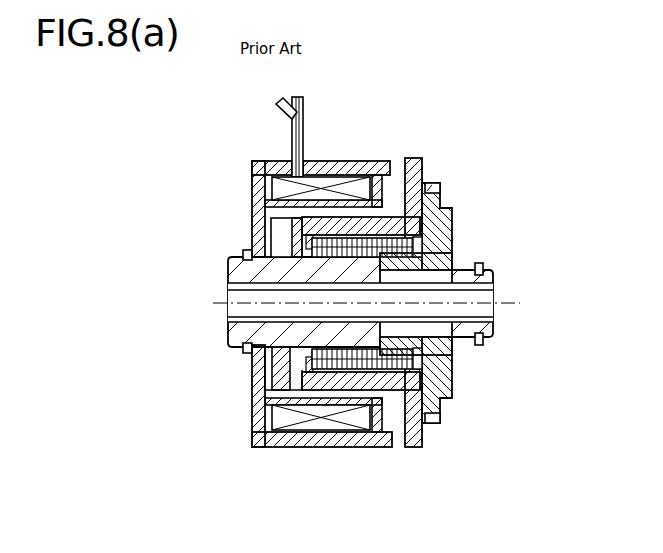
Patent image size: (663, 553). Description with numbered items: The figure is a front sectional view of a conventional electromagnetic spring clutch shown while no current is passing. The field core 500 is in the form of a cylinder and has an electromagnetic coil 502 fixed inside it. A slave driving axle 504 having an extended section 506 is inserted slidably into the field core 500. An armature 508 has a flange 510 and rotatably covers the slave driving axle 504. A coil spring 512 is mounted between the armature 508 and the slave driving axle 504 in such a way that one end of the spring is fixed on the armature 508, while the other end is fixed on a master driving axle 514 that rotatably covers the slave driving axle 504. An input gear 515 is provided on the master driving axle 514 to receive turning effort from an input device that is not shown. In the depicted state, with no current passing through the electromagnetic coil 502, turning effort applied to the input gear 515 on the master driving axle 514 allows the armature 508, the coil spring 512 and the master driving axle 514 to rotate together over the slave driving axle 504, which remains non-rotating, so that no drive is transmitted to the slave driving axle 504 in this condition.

The field core 500 is at (253, 162).
The electromagnetic coil 502 is at (265, 189).
The slave driving axle 504 is at (229, 275).
The extended section 506 is at (283, 232).
The armature 508 is at (232, 303).
The flange 510 is at (414, 158).
The coil spring 512 is at (452, 254).
The master driving axle 514 is at (452, 228).
The input gear 515 is at (431, 185).